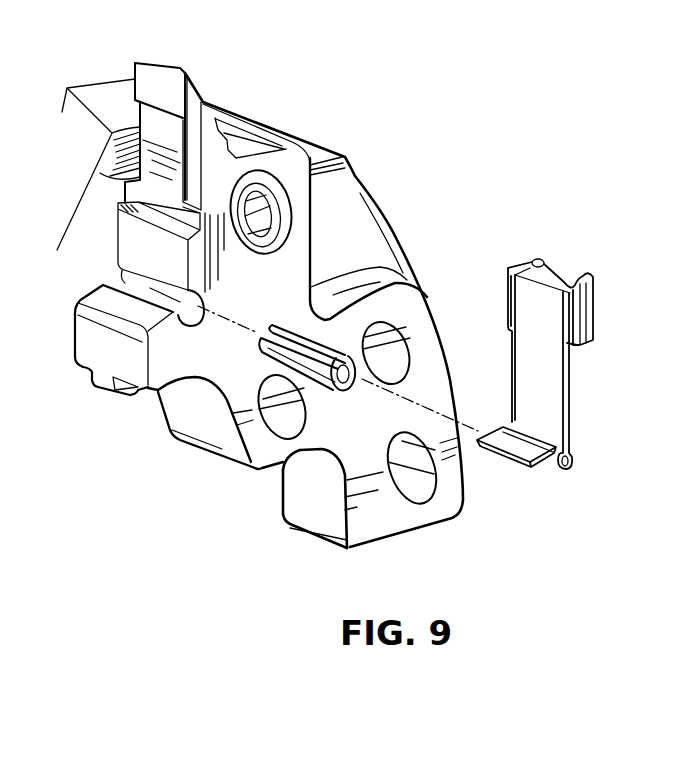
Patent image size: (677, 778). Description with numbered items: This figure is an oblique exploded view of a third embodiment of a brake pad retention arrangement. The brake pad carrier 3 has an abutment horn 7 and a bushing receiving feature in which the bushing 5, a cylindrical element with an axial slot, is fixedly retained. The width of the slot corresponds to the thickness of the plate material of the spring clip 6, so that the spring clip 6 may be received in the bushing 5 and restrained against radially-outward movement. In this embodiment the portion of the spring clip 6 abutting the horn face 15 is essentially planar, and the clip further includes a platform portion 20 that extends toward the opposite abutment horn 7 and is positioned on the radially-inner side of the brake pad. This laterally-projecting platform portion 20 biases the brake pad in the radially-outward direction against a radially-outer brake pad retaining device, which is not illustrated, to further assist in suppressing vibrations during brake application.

The brake pad carrier 3 is at (378, 190).
The horn 7 is at (170, 80).
The horn face 15 is at (110, 180).
The bushing 5 is at (315, 442).
The spring clip 6 is at (557, 370).
The platform portion 20 is at (547, 453).